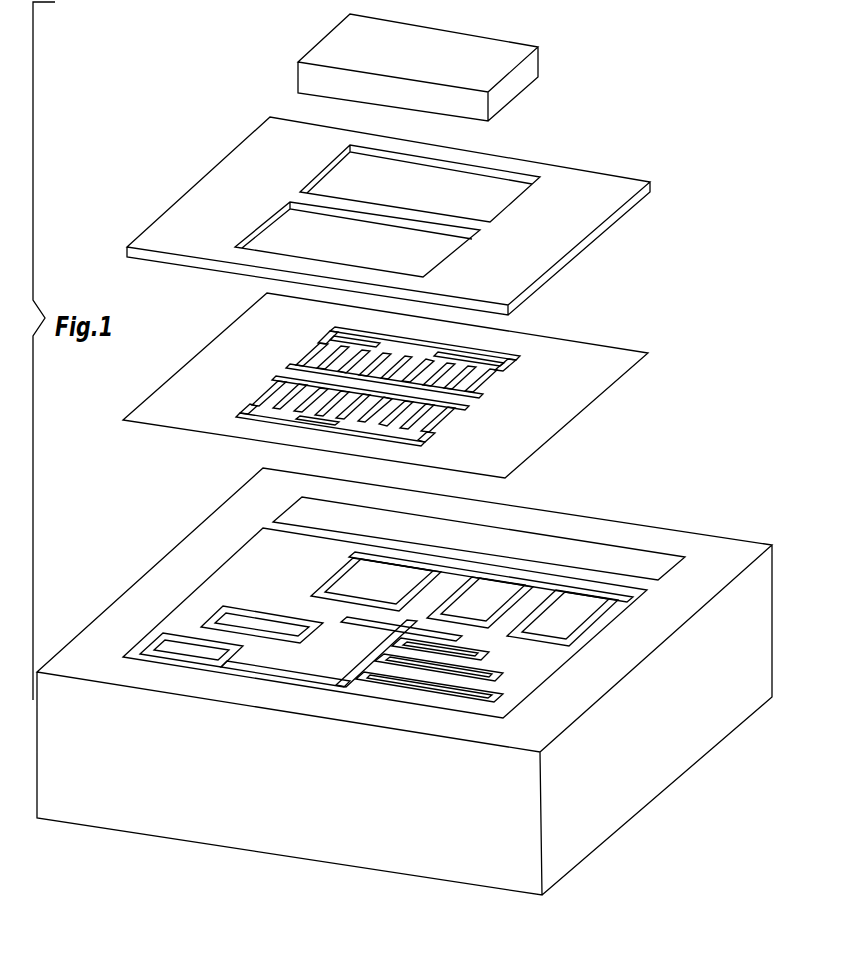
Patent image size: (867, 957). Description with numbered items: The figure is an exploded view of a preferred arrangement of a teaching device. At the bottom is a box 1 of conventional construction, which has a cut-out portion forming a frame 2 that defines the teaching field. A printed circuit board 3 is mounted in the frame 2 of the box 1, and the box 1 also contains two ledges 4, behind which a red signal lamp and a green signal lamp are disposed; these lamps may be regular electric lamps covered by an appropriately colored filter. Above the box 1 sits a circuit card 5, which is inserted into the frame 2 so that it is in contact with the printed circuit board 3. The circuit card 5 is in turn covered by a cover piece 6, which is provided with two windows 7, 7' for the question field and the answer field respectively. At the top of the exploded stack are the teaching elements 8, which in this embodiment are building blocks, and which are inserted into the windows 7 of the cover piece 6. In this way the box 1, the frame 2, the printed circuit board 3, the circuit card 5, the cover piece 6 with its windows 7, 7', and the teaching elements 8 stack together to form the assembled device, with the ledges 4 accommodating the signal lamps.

The box 1 is at (404, 681).
The frame 2 is at (173, 613).
The printed circuit board 3 is at (327, 607).
The ledges 4 is at (522, 545).
The circuit card 5 is at (565, 413).
The cover piece 6 is at (388, 216).
The window 7 is at (428, 173).
The window 7' is at (373, 241).
The teaching elements 8 is at (537, 63).